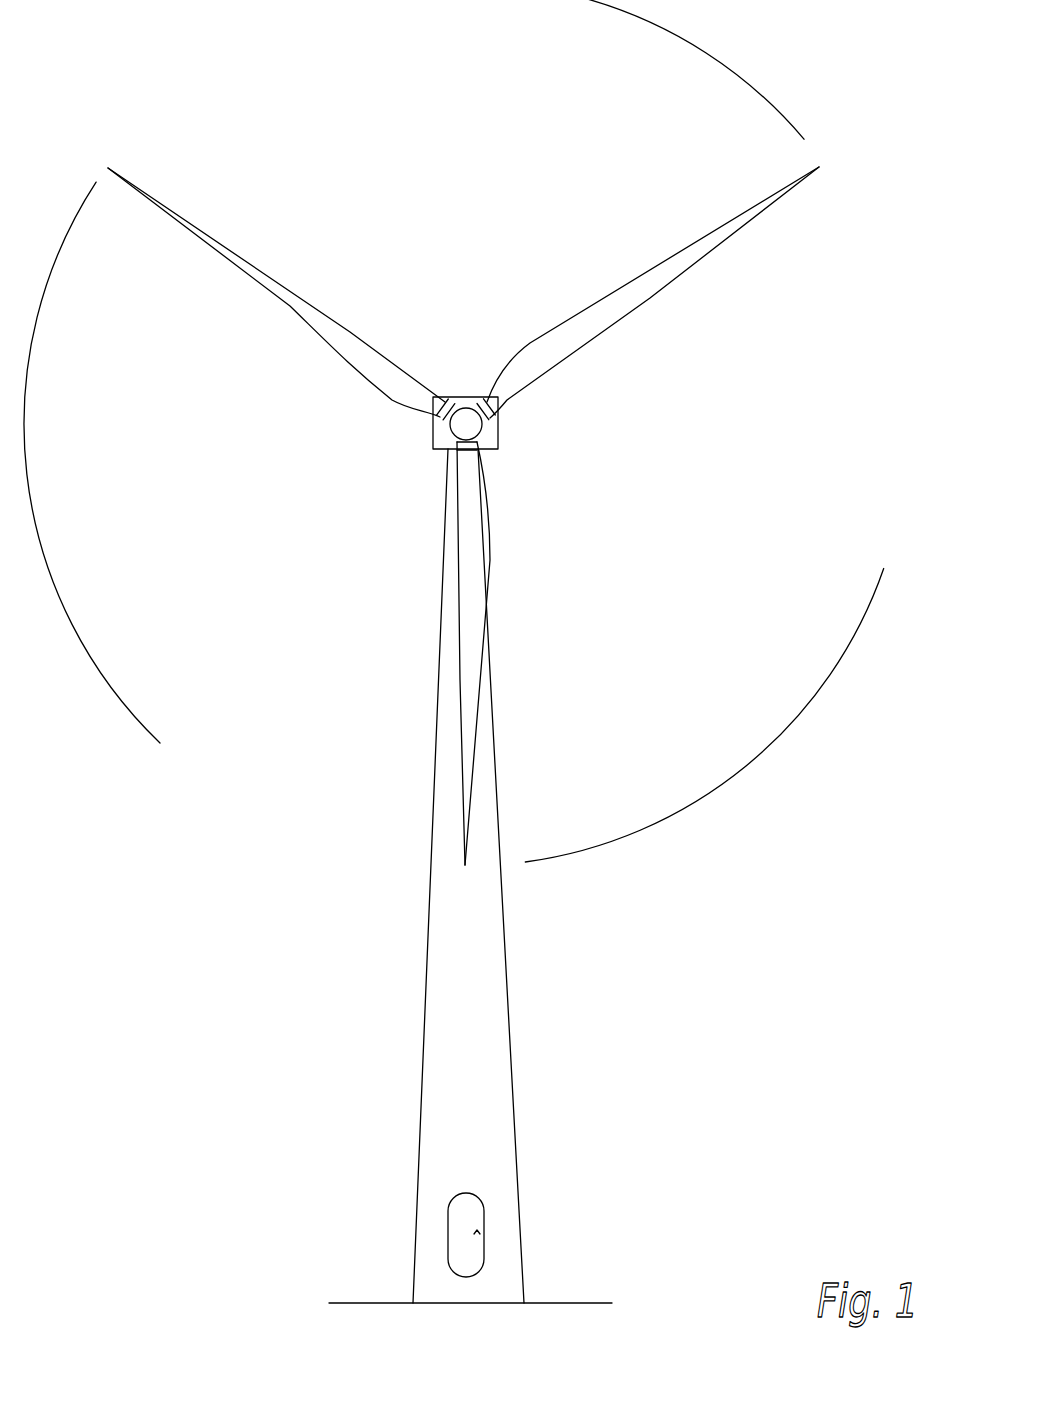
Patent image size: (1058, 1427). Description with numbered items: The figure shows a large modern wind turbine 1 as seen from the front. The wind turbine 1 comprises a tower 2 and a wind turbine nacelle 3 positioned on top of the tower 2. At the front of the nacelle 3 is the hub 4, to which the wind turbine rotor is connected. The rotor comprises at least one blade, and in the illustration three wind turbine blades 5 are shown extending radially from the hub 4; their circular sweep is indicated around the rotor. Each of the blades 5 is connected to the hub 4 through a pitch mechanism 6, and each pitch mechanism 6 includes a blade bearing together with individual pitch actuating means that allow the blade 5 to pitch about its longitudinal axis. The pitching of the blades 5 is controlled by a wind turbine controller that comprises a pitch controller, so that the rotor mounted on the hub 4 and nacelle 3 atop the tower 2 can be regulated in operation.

The wind turbine 1 is at (415, 1088).
The tower 2 is at (500, 965).
The wind turbine nacelle 3 is at (498, 448).
The hub 4 is at (463, 415).
The wind turbine blades 5 is at (267, 280).
The pitch mechanisms 6 is at (440, 417).